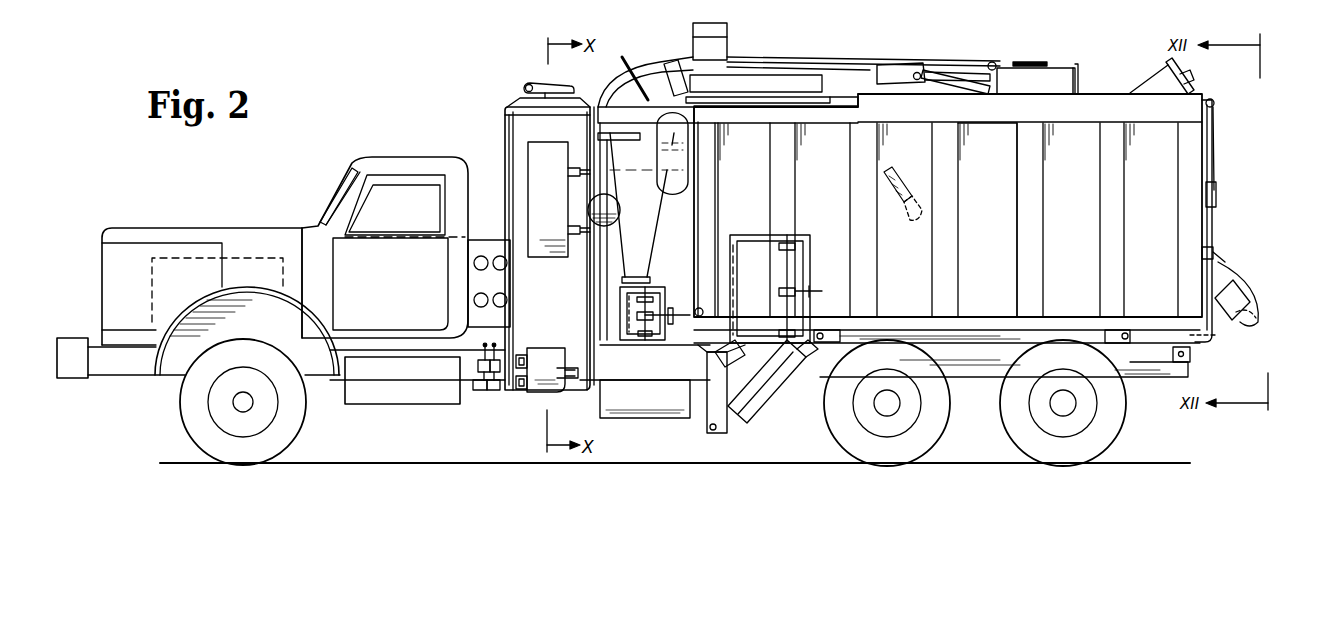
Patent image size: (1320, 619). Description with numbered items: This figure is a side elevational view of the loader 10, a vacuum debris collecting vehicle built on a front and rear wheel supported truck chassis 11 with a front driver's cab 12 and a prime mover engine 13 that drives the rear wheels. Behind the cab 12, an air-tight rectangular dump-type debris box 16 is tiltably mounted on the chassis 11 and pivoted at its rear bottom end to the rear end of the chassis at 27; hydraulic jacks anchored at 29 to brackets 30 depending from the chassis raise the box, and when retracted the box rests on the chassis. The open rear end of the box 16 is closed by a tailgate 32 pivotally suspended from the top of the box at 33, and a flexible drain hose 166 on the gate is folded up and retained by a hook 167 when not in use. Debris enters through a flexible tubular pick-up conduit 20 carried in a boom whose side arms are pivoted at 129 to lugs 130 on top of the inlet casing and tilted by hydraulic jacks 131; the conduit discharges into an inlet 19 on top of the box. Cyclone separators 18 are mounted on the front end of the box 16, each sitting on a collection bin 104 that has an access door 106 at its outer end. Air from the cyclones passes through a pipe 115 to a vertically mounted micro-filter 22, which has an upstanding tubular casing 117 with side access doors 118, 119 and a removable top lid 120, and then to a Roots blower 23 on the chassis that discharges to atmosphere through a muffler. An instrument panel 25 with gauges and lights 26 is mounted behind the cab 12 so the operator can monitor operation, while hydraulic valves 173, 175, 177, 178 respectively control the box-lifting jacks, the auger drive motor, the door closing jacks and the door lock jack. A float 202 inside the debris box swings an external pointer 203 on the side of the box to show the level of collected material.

The loader 10 is at (1112, 76).
The truck chassis 11 is at (1140, 380).
The driver's cab 12 is at (398, 157).
The prime mover engine 13 is at (250, 258).
The debris box 16 is at (1000, 204).
The cyclone separator 18 is at (660, 214).
The inlet 19 is at (1060, 68).
The debris pick-up conduit 20 is at (948, 72).
The micro-filter 22 is at (512, 104).
The Roots blower 23 is at (655, 406).
The instrument panel 25 is at (487, 240).
The gauges and lights 26 is at (490, 281).
The box pivot 27 is at (1192, 356).
The jack anchor pivot 29 is at (728, 425).
The bracket 30 is at (712, 408).
The tailgate 32 is at (822, 334).
The tailgate pivot 33 is at (1214, 104).
The collection bin 104 is at (668, 285).
The access door 106 is at (650, 340).
The pipe 115 is at (600, 205).
The tubular casing 117 is at (507, 150).
The side access door 118 is at (540, 257).
The side access door 119 is at (545, 350).
The top lid 120 is at (545, 90).
The boom arm pivot 129 is at (993, 62).
The lug 130 is at (1003, 62).
The hydraulic jack 131 is at (955, 93).
The flexible hose 166 is at (1248, 296).
The hook 167 is at (1226, 258).
The valve 173 is at (488, 390).
The valve 175 is at (478, 390).
The control valve 177 is at (480, 362).
The control valve 178 is at (497, 372).
The float 202 is at (912, 218).
The pointer 203 is at (898, 178).